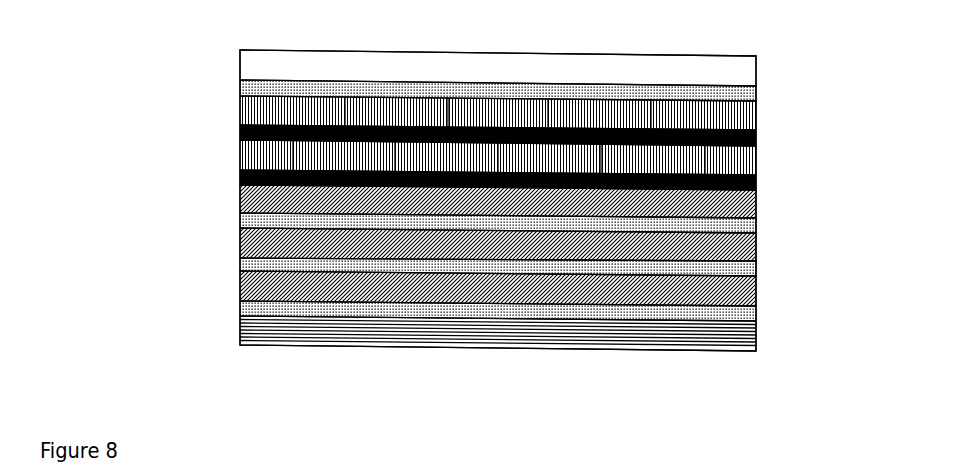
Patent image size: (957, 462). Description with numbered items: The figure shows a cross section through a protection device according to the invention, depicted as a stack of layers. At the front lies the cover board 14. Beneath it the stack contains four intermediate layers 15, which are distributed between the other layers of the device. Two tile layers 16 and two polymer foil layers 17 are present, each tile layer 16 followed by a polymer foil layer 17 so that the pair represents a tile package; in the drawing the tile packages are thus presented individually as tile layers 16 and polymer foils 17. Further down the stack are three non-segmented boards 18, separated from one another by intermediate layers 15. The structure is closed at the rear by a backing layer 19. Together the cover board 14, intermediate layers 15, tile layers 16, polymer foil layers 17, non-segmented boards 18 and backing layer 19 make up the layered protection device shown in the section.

The cover board 14 is at (737, 63).
The intermediate layer 15 is at (737, 86).
The tile layer 16 is at (737, 108).
The polymer foil layer 17 is at (748, 138).
The non-segmented board 18 is at (246, 188).
The backing layer 19 is at (246, 322).